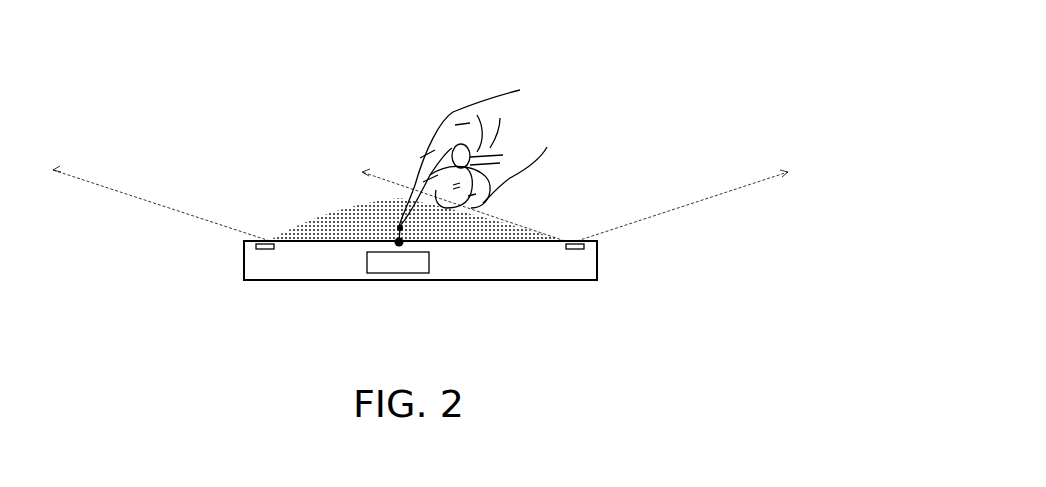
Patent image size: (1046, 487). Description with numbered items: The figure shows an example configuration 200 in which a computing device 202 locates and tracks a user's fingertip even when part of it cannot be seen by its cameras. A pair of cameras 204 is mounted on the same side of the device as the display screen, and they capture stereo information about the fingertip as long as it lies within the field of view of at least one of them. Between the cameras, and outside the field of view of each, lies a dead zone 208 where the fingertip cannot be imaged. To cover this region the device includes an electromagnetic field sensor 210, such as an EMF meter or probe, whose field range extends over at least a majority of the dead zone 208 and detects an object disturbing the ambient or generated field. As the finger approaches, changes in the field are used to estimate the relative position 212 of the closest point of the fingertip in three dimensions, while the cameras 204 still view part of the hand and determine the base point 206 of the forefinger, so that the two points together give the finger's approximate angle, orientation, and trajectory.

The example configuration 200 is at (716, 96).
The device 202 is at (597, 272).
The cameras 204 is at (270, 241).
The base point 206 is at (442, 134).
The dead zone 208 is at (348, 222).
The electromagnetic field (EMF) sensor 210 is at (377, 274).
The relative position of fingertip 212 is at (424, 241).